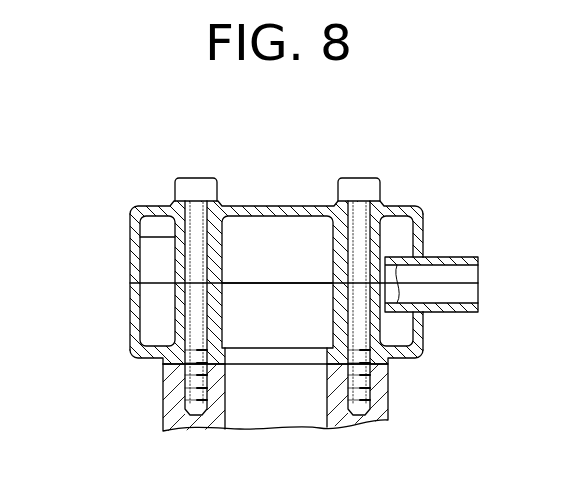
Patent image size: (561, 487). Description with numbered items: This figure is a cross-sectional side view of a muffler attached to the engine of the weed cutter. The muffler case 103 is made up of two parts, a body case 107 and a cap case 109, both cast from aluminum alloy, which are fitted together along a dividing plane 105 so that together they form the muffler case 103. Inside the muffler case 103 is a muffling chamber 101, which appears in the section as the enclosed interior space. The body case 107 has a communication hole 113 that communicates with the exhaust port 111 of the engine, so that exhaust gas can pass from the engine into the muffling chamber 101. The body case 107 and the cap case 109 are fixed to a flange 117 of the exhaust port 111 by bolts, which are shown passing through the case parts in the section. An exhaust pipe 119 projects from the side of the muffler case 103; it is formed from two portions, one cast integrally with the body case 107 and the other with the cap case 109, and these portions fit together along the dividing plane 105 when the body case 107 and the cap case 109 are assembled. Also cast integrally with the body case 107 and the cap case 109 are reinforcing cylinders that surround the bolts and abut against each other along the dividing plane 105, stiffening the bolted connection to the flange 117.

The muffling chamber 101 is at (258, 233).
The muffler case 103 is at (116, 268).
The dividing plane 105 is at (281, 267).
The body case 107 is at (128, 340).
The cap case 109 is at (137, 210).
The exhaust port 111 is at (310, 422).
The communication hole 113 is at (262, 357).
The flange 117 is at (224, 345).
The exhaust pipe 119 is at (450, 277).